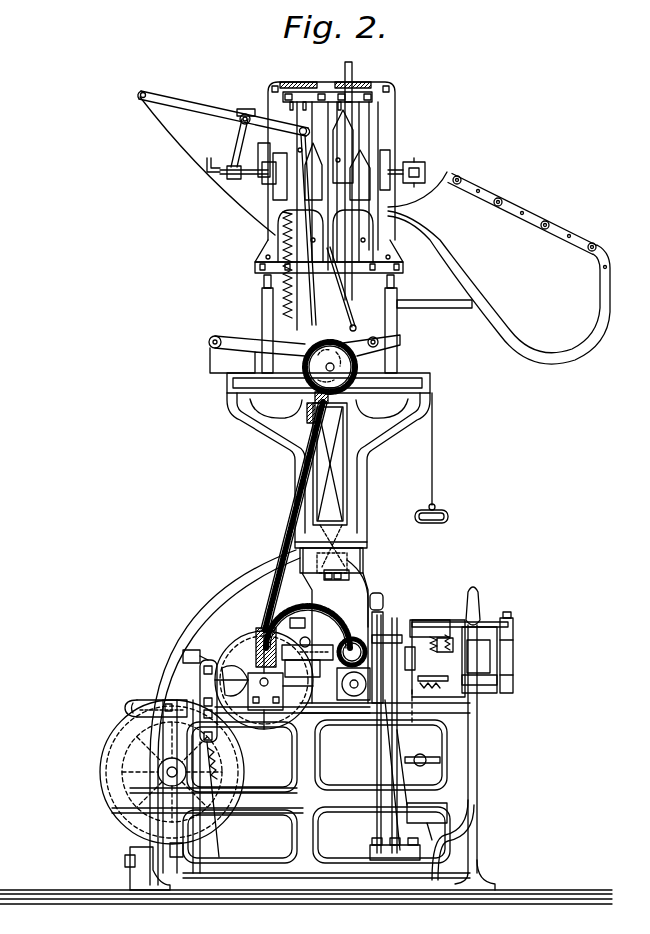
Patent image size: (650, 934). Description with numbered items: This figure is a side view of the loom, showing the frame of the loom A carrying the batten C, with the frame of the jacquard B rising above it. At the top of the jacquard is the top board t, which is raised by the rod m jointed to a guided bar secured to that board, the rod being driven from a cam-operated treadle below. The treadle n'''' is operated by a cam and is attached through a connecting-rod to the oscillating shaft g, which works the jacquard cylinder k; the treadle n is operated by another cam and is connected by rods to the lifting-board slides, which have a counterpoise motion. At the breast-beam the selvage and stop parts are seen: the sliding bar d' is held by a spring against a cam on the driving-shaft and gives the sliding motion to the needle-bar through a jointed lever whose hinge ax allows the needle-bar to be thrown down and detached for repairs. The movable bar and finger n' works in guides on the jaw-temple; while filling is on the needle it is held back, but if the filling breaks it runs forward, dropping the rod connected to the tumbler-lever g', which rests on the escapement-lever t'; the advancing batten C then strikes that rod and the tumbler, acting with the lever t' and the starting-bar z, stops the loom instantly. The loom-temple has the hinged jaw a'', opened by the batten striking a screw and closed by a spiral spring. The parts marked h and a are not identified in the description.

The top board t is at (325, 84).
The oscillating shaft g is at (235, 149).
The bracket h is at (236, 171).
The cylinder k is at (412, 170).
The frame of the jacquard B is at (315, 314).
The rod m is at (341, 289).
The treadle n'''' is at (257, 346).
The treadle n is at (371, 347).
The connecting rod a is at (291, 534).
The frame of the loom A is at (172, 761).
The batten C is at (395, 726).
The sliding bar d' is at (435, 785).
The movable bar and finger n' is at (435, 648).
The hinged jaw a'' is at (460, 612).
The joint or hinge ax is at (517, 652).
The tumbler-lever g' is at (504, 660).
The escapement-lever t' is at (489, 690).
The starting-bar z is at (475, 729).